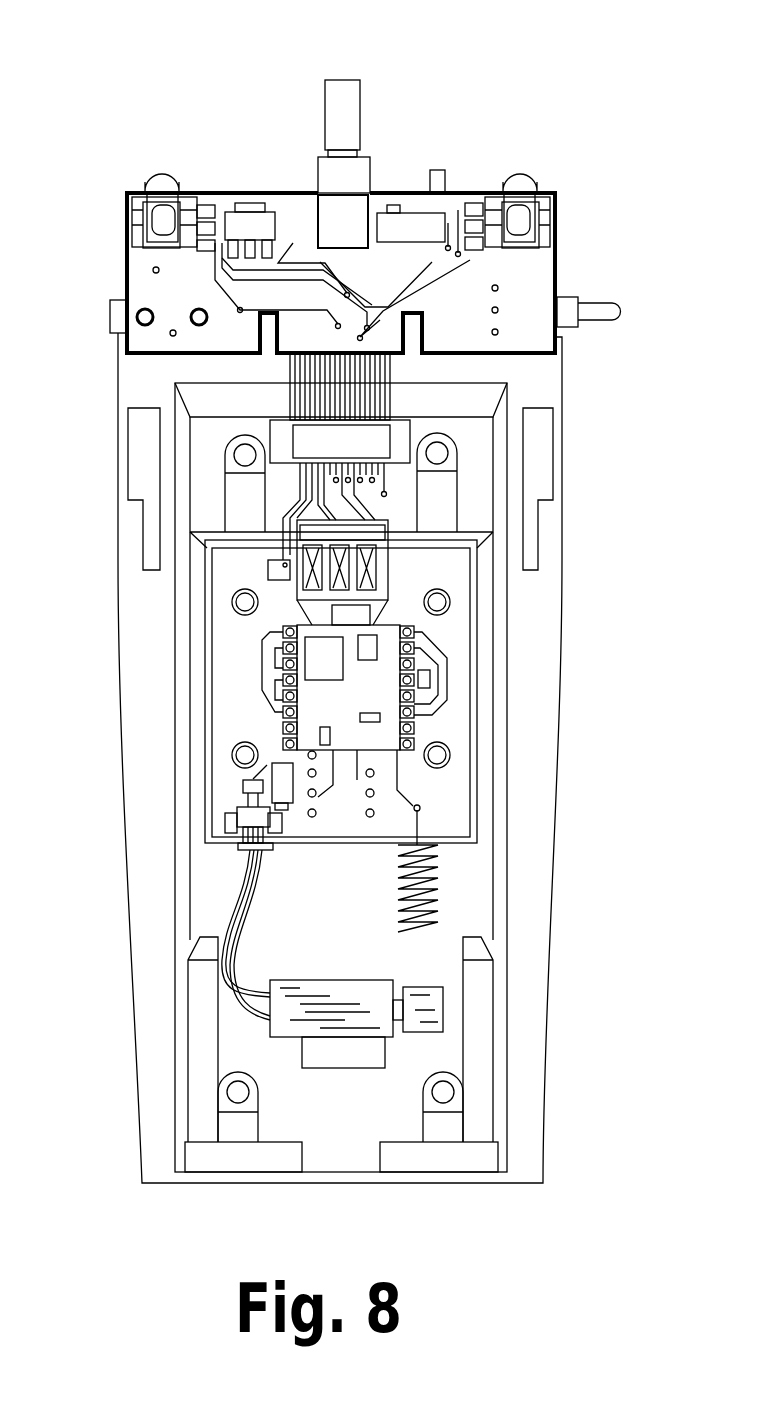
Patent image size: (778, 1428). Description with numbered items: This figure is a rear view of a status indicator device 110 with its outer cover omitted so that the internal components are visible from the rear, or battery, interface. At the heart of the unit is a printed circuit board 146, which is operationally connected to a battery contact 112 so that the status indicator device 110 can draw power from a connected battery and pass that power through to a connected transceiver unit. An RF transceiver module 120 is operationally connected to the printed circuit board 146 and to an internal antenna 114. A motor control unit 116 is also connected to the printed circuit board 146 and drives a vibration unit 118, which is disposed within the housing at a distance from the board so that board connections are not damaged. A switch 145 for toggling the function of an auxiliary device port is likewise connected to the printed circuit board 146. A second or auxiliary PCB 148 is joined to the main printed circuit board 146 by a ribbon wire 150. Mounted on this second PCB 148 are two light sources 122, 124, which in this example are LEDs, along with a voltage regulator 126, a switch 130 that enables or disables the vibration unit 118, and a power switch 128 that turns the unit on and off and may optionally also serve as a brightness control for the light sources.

The status indicator device 110 is at (100, 98).
The battery contact 112 is at (395, 570).
The internal antenna 114 is at (433, 873).
The motor control unit 116 is at (240, 815).
The vibration unit 118 is at (433, 1022).
The RF transceiver module 120 is at (300, 688).
The light source 122 is at (132, 178).
The light source 124 is at (535, 176).
The voltage regulator 126 is at (243, 210).
The power switch 128 is at (362, 106).
The switch 130 is at (446, 182).
The switch 145 is at (266, 567).
The printed circuit board 146 is at (448, 688).
The second PCB 148 is at (555, 283).
The ribbon wire 150 is at (393, 375).